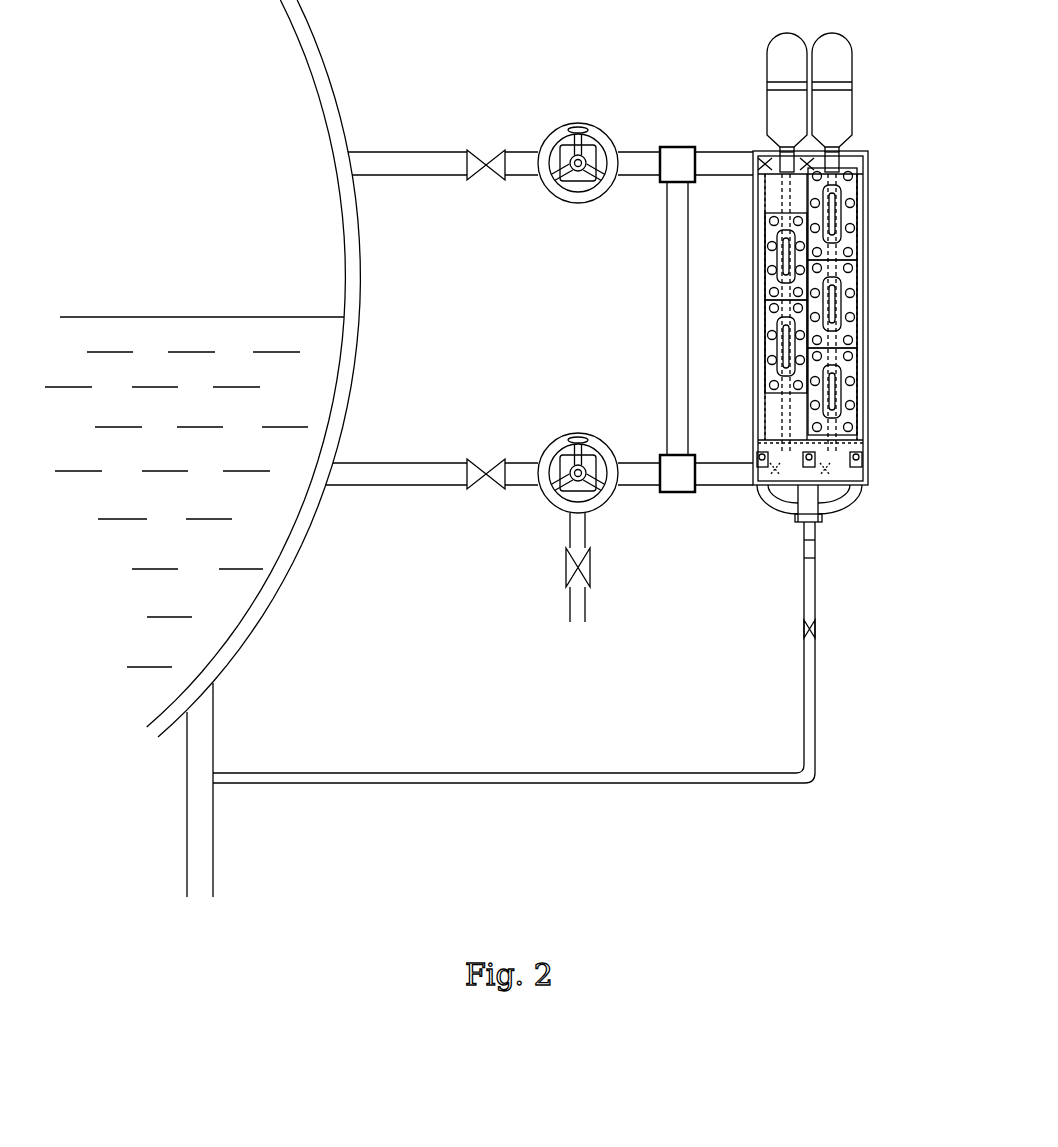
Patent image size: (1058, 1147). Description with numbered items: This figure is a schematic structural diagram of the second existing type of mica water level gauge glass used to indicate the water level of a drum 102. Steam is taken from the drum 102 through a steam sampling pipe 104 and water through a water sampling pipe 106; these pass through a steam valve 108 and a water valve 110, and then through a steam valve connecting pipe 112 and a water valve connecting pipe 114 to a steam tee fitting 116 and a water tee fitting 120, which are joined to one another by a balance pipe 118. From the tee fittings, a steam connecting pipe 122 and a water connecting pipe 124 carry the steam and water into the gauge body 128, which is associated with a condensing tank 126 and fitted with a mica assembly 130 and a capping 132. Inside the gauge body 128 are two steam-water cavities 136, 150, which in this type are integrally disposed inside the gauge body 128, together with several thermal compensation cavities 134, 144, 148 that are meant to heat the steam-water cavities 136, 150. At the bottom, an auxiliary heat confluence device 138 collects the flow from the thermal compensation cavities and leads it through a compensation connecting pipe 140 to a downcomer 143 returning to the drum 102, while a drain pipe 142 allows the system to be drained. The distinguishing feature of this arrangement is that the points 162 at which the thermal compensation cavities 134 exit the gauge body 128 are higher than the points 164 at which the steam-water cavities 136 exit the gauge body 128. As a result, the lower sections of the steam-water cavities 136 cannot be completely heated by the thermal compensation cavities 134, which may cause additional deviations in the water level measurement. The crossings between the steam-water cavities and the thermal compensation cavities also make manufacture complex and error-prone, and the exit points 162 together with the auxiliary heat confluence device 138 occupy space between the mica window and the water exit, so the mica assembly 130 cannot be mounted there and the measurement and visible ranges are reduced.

The drum 102 is at (324, 118).
The steam sampling pipe 104 is at (406, 151).
The water sampling pipe 106 is at (460, 462).
The steam valve 108 is at (558, 125).
The water valve 110 is at (556, 438).
The steam valve connecting pipe 112 is at (641, 151).
The water valve connecting pipe 114 is at (620, 462).
The steam tee fitting 116 is at (679, 147).
The balance pipe 118 is at (668, 330).
The water tee fitting 120 is at (672, 455).
The steam connecting pipe 122 is at (736, 152).
The water connecting pipe 124 is at (760, 470).
The condensing tank 126 is at (775, 98).
The gauge body 128 is at (868, 168).
The mica assembly 130 is at (840, 223).
The capping 132 is at (858, 327).
The thermal compensation cavity 134 is at (813, 417).
The steam-water cavity 136 is at (788, 432).
The auxiliary heat confluence device 138 is at (863, 503).
The compensation connecting pipe 140 is at (815, 577).
The drain pipe 142 is at (587, 530).
The downcomer 143 is at (213, 840).
The thermal compensation cavity 144 is at (765, 397).
The thermal compensation cavity 148 is at (857, 413).
The steam-water cavity 150 is at (867, 438).
The points at which the thermal compensation cavities exit the gauge body 162 is at (867, 457).
The points at which the steam-water cavities exit the gauge body 164 is at (785, 492).